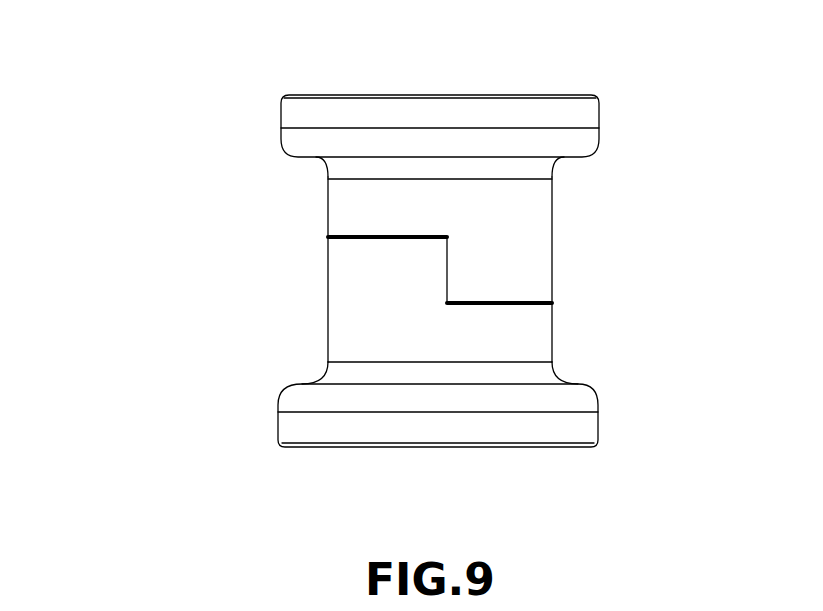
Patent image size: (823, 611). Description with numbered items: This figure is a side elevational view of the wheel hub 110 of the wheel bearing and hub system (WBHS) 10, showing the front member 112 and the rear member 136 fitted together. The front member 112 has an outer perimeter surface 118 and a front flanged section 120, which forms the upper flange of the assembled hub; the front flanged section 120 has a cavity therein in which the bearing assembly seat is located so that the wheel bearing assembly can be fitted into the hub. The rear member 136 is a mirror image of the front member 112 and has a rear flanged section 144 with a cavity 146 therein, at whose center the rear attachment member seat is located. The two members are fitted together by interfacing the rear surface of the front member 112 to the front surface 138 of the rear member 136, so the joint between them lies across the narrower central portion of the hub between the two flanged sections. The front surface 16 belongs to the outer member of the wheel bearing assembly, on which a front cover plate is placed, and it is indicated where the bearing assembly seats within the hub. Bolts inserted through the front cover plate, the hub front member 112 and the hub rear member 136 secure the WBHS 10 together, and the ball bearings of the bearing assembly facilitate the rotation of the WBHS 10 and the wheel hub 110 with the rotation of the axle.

The wheel bearing and hub system (WBHS) 10 is at (98, 92).
The wheel hub 110 is at (688, 127).
The front member 112 is at (520, 95).
The front flanged section 120 is at (573, 146).
The outer perimeter surface 118 is at (517, 240).
The front surface 16 is at (355, 241).
The cavity 146 is at (365, 330).
The front surface 138 is at (497, 303).
The rear flanged section 144 is at (340, 403).
The rear member 136 is at (567, 449).